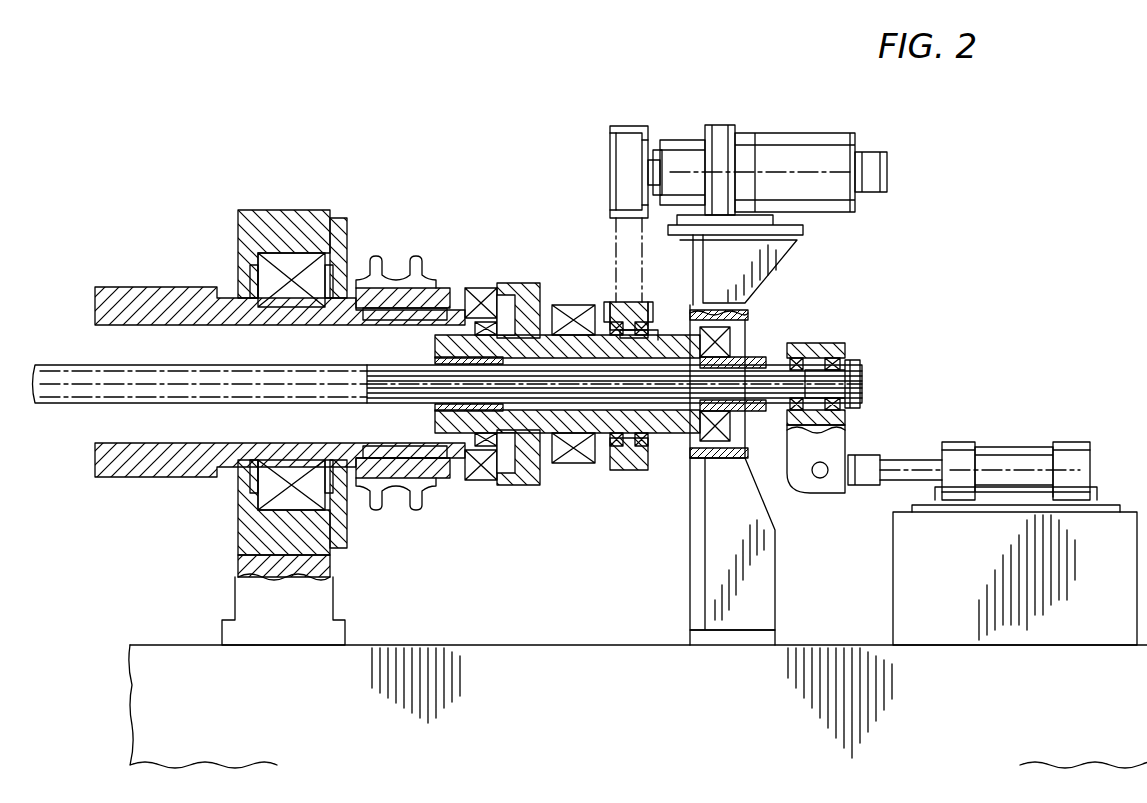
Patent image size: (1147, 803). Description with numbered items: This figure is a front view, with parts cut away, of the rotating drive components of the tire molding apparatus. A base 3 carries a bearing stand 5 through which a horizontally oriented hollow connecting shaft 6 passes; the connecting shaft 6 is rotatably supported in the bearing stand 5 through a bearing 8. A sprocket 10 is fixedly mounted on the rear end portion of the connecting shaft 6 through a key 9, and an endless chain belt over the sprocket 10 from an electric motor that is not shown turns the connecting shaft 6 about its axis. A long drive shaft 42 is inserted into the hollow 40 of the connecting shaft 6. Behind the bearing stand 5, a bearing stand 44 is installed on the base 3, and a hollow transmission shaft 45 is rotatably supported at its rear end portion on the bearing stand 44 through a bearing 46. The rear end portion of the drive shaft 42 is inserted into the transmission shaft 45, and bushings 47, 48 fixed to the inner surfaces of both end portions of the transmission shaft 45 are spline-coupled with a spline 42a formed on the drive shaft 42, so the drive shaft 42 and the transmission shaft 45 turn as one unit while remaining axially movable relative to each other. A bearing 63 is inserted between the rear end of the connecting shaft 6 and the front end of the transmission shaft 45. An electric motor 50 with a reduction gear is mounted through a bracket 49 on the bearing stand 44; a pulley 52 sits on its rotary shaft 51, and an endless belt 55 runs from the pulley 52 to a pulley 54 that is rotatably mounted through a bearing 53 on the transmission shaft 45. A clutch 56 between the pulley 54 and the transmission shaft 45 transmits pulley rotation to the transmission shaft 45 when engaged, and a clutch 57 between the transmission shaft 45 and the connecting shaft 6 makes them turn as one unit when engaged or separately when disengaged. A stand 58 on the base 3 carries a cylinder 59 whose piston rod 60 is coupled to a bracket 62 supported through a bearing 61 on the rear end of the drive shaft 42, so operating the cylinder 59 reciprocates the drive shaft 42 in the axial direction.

The base 3 is at (500, 644).
The bearing stand 5 is at (290, 218).
The connecting shaft 6 is at (172, 280).
The bearing 8 is at (258, 280).
The key 9 is at (444, 300).
The sprocket 10 is at (420, 282).
The hollow 40 is at (216, 443).
The drive shaft 42 is at (276, 365).
The spline 42a is at (402, 410).
The bearing stand 44 is at (694, 554).
The transmission shaft 45 is at (676, 438).
The bearing 46 is at (744, 330).
The bushing 47 is at (434, 363).
The bushing 48 is at (768, 360).
The bracket 49 is at (774, 278).
The electric motor 50 is at (800, 134).
The rotary shaft 51 is at (654, 156).
The pulley 52 is at (614, 172).
The bearing 53 is at (648, 338).
The pulley 54 is at (646, 306).
The endless belt 55 is at (614, 260).
The clutch 56 is at (583, 473).
The clutch 57 is at (488, 488).
The stand 58 is at (893, 578).
The cylinder 59 is at (1008, 445).
The piston rod 60 is at (914, 460).
The bearing 61 is at (840, 356).
The bracket 62 is at (844, 440).
The bearing 63 is at (504, 292).